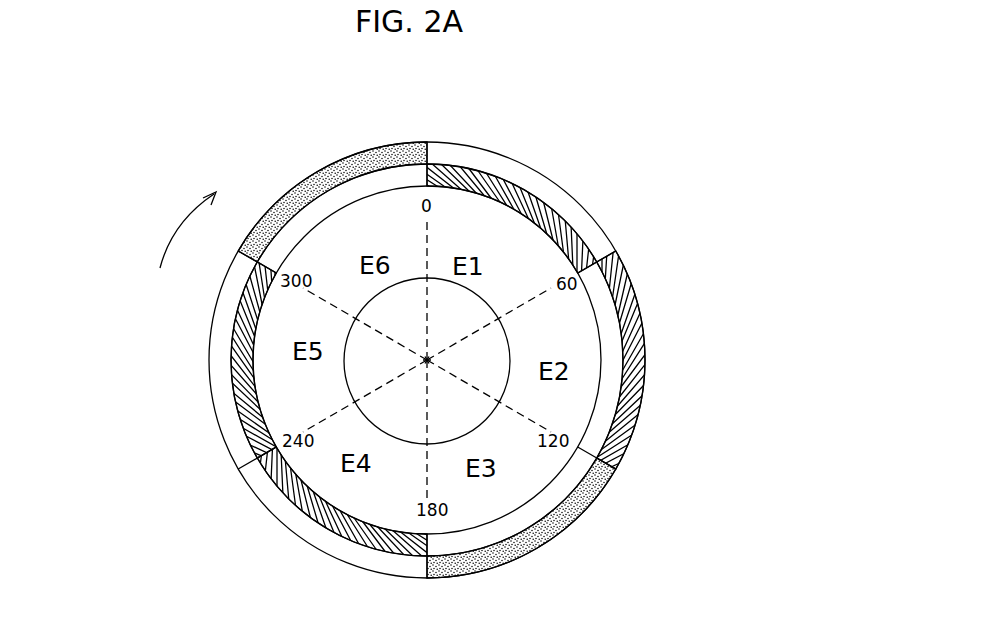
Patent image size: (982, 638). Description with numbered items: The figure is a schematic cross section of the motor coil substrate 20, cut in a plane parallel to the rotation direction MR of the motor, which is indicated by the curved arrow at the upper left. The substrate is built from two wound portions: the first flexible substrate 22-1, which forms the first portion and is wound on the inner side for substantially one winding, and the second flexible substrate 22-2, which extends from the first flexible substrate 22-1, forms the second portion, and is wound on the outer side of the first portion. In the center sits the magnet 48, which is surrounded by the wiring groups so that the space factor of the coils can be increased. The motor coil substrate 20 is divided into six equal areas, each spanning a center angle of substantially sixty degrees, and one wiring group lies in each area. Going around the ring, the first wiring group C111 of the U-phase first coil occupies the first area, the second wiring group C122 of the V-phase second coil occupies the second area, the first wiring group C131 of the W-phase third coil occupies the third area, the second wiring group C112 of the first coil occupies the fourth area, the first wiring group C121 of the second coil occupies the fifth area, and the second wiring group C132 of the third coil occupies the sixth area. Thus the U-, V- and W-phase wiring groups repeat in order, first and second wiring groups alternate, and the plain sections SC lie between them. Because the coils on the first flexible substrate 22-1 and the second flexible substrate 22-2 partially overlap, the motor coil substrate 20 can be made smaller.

The motor coil substrate 20 is at (492, 122).
The first flexible substrate 22-1 is at (569, 237).
The second flexible substrate 22-2 is at (601, 239).
The magnet 48 is at (484, 305).
The first wiring group of the first coil C111 is at (541, 208).
The second wiring group of the first coil C112 is at (302, 515).
The first wiring group of the second coil C121 is at (235, 384).
The second wiring group of the second coil C122 is at (641, 356).
The first wiring group of the third coil C131 is at (575, 504).
The second wiring group of the third coil C132 is at (337, 165).
The spacer / blank section SC is at (513, 166).
The rotation direction MR is at (179, 230).